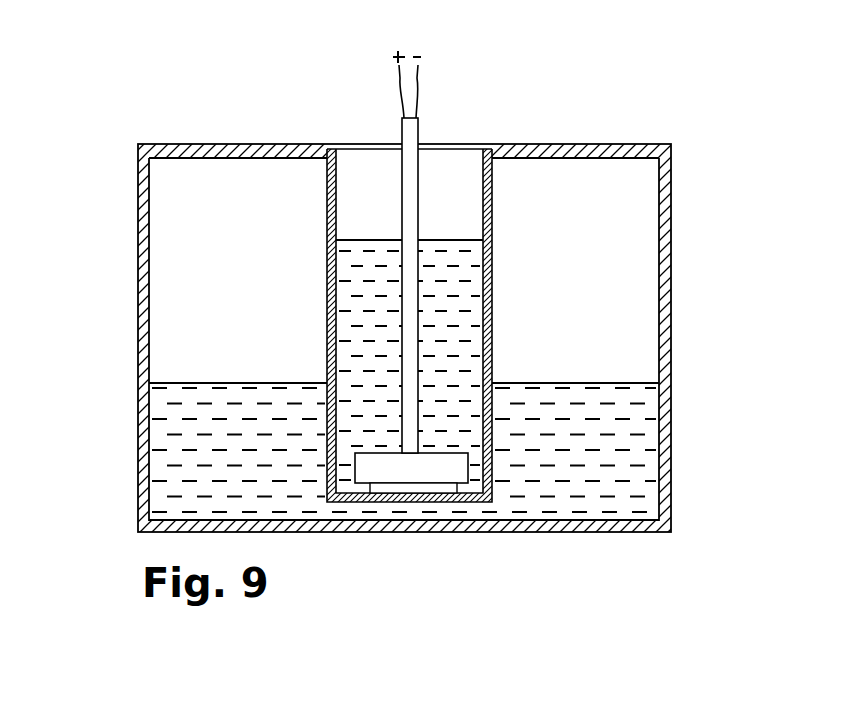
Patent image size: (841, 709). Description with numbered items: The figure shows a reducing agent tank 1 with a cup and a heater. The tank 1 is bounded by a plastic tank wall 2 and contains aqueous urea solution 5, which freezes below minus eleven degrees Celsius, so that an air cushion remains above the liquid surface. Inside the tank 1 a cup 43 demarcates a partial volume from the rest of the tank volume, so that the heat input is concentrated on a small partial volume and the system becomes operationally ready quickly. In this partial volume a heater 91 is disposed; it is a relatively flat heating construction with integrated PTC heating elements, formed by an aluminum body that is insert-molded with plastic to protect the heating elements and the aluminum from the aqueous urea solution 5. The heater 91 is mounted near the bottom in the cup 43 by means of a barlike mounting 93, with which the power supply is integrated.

The tank 1 is at (104, 177).
The tank wall 2 is at (668, 318).
The aqueous urea solution 5 is at (645, 452).
The cup 43 is at (493, 457).
The heater 91 is at (400, 471).
The barlike mounting 93 is at (410, 188).